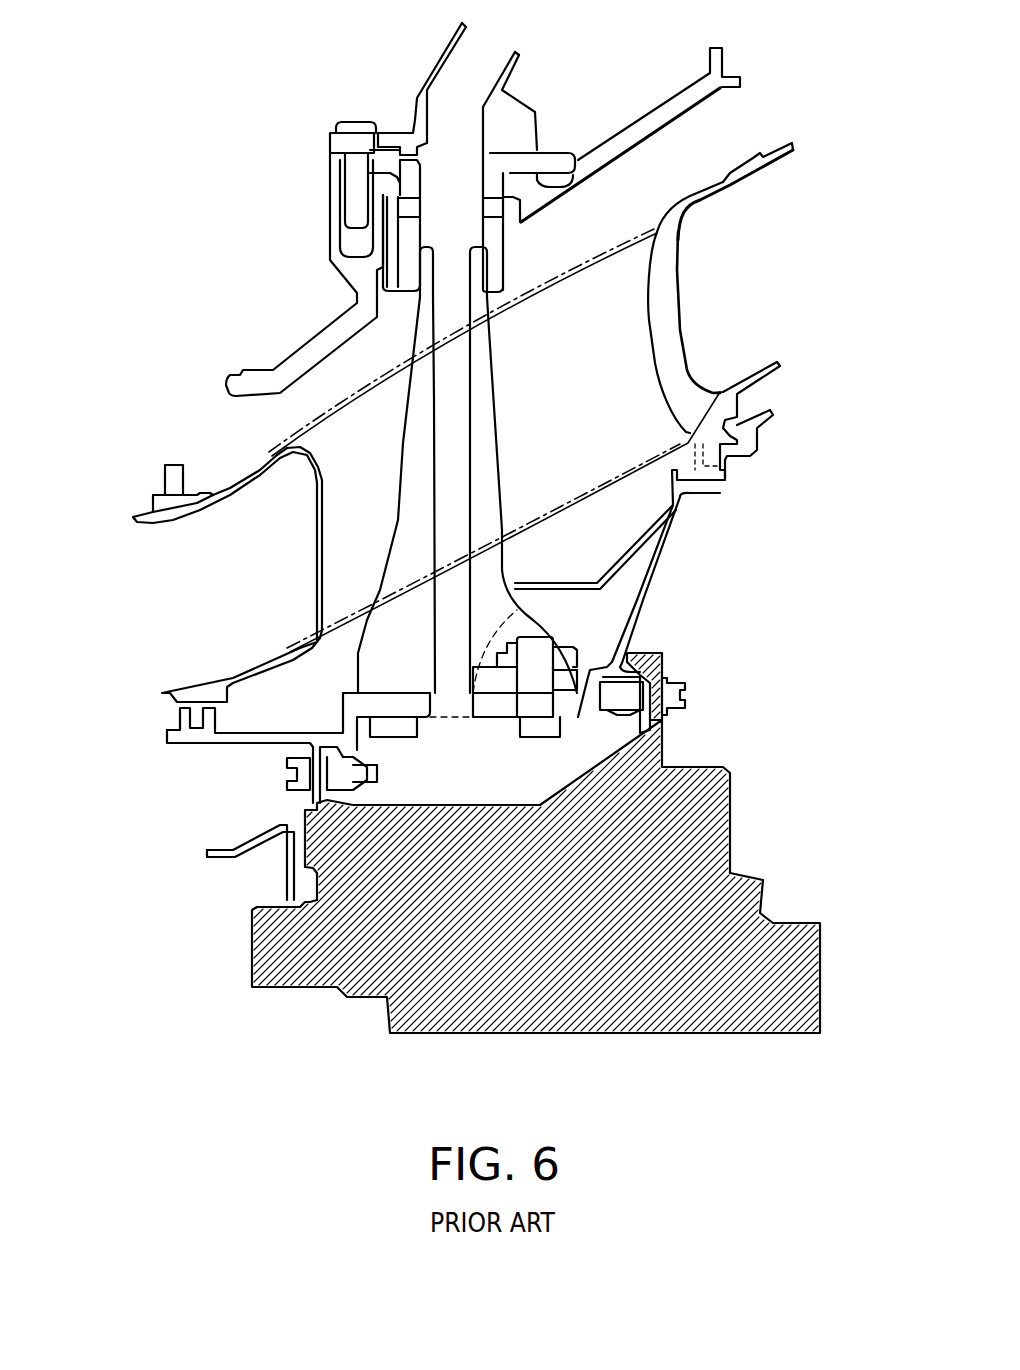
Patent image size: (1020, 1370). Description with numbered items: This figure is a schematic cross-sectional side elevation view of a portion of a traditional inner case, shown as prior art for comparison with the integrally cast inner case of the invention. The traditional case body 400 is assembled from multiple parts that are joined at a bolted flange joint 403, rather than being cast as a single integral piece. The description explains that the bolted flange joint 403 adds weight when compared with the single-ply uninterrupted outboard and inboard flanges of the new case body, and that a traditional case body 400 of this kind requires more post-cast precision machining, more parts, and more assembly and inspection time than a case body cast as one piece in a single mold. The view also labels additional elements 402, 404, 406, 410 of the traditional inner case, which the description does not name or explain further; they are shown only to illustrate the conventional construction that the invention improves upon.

The traditional case body 400 is at (653, 657).
The seal 402 is at (250, 837).
The bolted flange joint 403 is at (387, 767).
The casing 404 is at (167, 743).
The rotor platform 406 is at (363, 705).
The ring 410 is at (252, 747).